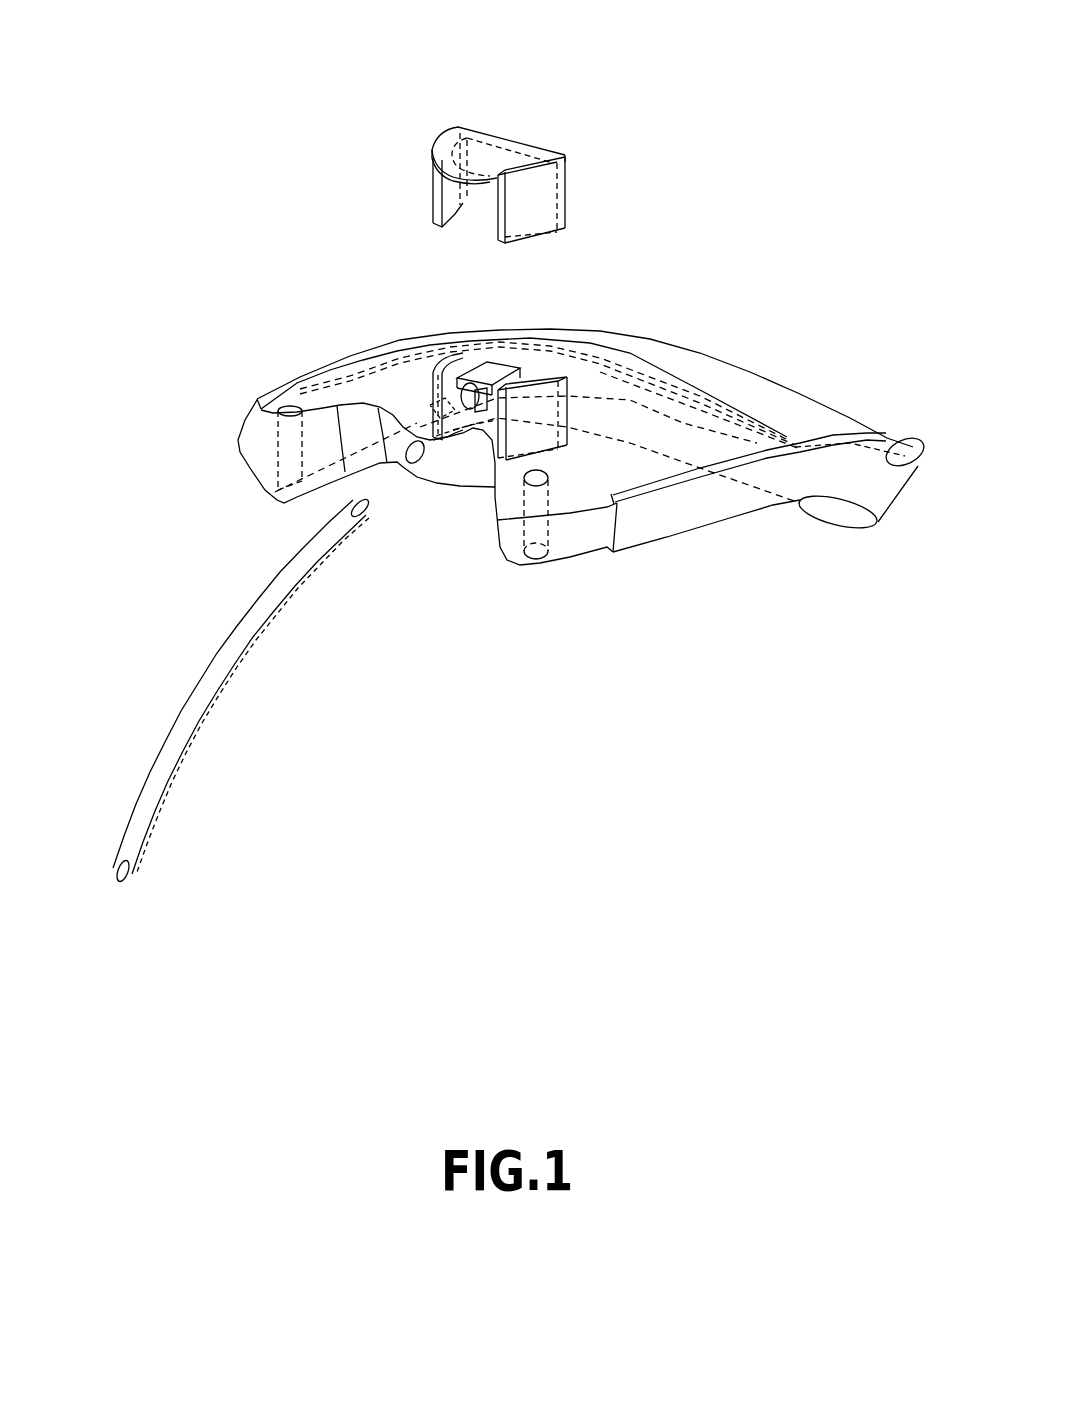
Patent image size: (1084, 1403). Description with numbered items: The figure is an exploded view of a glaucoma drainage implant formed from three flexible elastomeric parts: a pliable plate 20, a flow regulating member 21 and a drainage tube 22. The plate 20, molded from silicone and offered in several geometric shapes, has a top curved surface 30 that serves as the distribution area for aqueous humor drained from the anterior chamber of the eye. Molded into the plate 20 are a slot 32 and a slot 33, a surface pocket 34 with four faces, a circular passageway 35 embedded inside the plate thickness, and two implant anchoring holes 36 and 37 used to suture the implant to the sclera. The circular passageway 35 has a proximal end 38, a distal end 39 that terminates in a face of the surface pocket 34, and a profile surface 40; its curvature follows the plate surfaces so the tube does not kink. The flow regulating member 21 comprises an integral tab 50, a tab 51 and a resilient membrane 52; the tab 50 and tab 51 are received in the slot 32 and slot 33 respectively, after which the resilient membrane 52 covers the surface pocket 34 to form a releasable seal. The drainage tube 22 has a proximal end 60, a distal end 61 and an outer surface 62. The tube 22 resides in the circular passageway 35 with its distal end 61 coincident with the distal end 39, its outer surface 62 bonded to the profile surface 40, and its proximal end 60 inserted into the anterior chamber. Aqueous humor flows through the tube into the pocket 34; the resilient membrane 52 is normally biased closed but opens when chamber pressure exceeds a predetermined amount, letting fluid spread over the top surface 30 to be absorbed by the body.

The pliable plate 20 is at (773, 477).
The flow regulating member 21 is at (433, 170).
The drainage tube 22 is at (250, 726).
The top curved surface 30 is at (747, 395).
The slot 32 is at (567, 393).
The slot 33 is at (428, 405).
The surface pocket 34 is at (492, 383).
The circular passageway 35 is at (433, 443).
The implant anchoring hole 36 is at (547, 527).
The implant anchoring hole 37 is at (277, 462).
The proximal end 38 is at (418, 463).
The distal end 39 is at (485, 415).
The profile surface 40 is at (403, 422).
The tab 50 is at (489, 140).
The tab 51 is at (433, 201).
The resilient membrane 52 is at (497, 150).
The proximal end 60 is at (133, 882).
The distal end 61 is at (367, 517).
The outer surface 62 is at (216, 703).